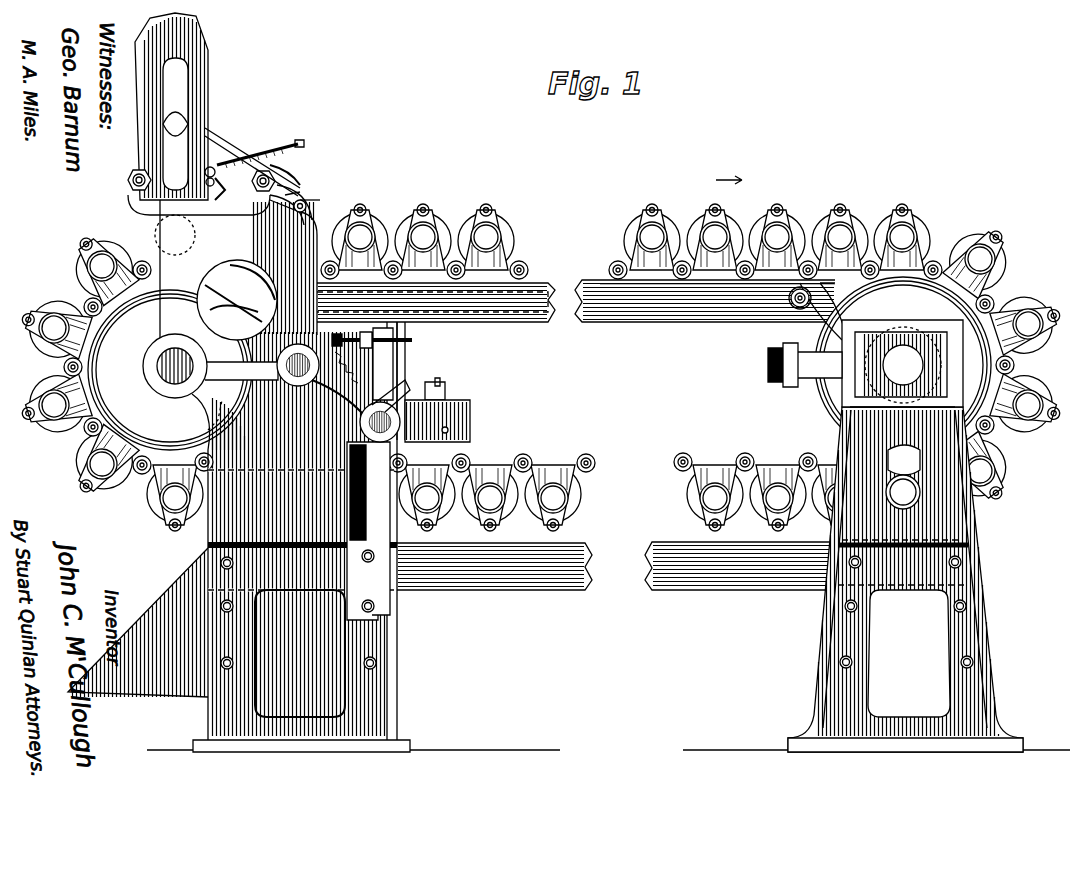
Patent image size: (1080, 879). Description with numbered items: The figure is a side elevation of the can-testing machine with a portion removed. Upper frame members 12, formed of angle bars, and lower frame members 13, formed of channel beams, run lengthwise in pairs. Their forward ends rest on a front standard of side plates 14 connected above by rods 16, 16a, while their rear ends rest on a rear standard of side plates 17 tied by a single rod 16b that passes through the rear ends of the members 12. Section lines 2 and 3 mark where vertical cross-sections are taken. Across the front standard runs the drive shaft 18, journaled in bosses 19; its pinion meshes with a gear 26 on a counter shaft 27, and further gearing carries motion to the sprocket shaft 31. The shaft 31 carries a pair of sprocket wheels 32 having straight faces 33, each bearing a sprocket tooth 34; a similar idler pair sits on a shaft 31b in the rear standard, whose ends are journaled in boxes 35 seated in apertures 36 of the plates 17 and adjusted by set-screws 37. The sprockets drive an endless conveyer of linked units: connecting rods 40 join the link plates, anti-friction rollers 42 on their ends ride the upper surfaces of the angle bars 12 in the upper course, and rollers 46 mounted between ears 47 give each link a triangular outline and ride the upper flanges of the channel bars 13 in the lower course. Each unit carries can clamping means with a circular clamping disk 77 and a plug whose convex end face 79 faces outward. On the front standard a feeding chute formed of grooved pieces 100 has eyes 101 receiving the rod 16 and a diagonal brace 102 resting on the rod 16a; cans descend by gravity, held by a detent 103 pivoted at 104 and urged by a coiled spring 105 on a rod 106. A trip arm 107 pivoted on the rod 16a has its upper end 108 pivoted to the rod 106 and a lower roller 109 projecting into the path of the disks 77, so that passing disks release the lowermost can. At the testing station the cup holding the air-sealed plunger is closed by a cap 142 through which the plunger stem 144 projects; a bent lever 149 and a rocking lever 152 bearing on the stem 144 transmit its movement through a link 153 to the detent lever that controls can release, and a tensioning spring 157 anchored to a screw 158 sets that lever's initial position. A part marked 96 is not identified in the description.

The section line 2— 2 is at (238, 190).
The section line 3— 3 is at (522, 290).
The upper frame members 12 is at (668, 322).
The lower frame members 13 is at (470, 590).
The front standard side plates 14 is at (285, 545).
The tie rod 16 is at (133, 170).
The tie rod 16a is at (285, 190).
The rear tie rod 16b is at (790, 305).
The rear standard side plates 17 is at (836, 632).
The drive shaft 18 is at (405, 385).
The bosses 19 is at (360, 418).
The gear 26 is at (237, 300).
The counter shaft 27 is at (328, 322).
The sprocket shaft 31 is at (168, 388).
The rear sprocket shaft 31b is at (902, 363).
The sprocket wheels 32 is at (950, 290).
The straight faces 33 is at (905, 300).
The sprocket tooth 34 is at (152, 312).
The boxes 35 is at (218, 400).
The apertures 36 is at (915, 410).
The set-screws 37 is at (788, 382).
The connecting rods 40 is at (470, 285).
The anti-friction rollers 42 is at (528, 270).
The anti-friction rollers 46 is at (92, 498).
The ears 47 is at (565, 527).
The can clamping disk 77 is at (985, 232).
The convex end face 79 is at (700, 505).
The lever arm 96 is at (163, 73).
The chute frame pieces 100 is at (176, 104).
The eyes 101 is at (233, 188).
The diagonal brace 102 is at (230, 140).
The detent 103 is at (285, 205).
The pivot 104 is at (205, 172).
The coiled spring 105 is at (275, 150).
The rod 106 is at (305, 143).
The trip arm 107 is at (310, 192).
The upper end of trip arm 108 is at (280, 165).
The roller 109 is at (308, 200).
The cap 142 is at (470, 415).
The plunger stem 144 is at (447, 392).
The bent lever 149 is at (410, 330).
The lever 152 is at (470, 372).
The link 153 is at (432, 302).
The tensioning spring 157 is at (390, 364).
The screw 158 is at (378, 335).